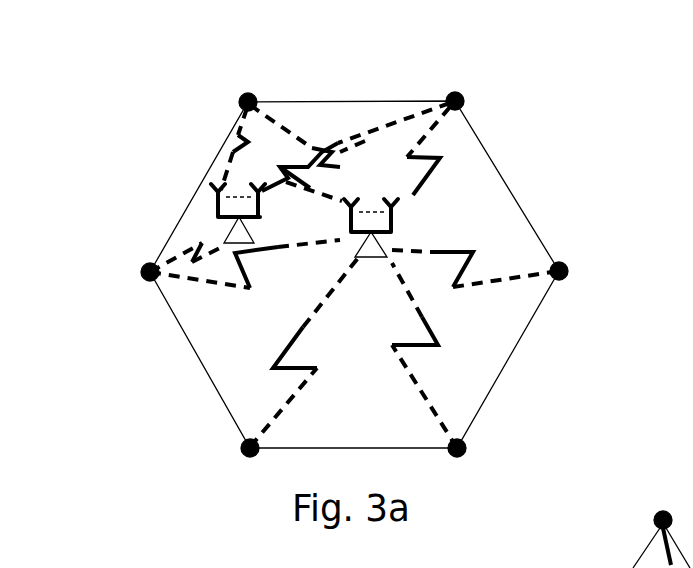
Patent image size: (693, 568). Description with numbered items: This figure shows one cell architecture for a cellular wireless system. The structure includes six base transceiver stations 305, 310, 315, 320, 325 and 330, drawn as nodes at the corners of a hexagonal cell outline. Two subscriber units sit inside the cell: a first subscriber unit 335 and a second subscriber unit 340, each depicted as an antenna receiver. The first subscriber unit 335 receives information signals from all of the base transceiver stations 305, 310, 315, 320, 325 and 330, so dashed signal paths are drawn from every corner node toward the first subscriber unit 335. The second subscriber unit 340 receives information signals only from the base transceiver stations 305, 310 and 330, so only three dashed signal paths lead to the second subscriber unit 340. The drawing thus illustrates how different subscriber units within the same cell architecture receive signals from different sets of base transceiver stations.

The base transceiver station 305 is at (242, 97).
The base transceiver station 310 is at (462, 99).
The base transceiver station 315 is at (566, 268).
The base transceiver station 320 is at (465, 450).
The base transceiver station 325 is at (244, 455).
The base transceiver station 330 is at (143, 268).
The first subscriber unit 335 is at (408, 203).
The second subscriber unit 340 is at (212, 200).